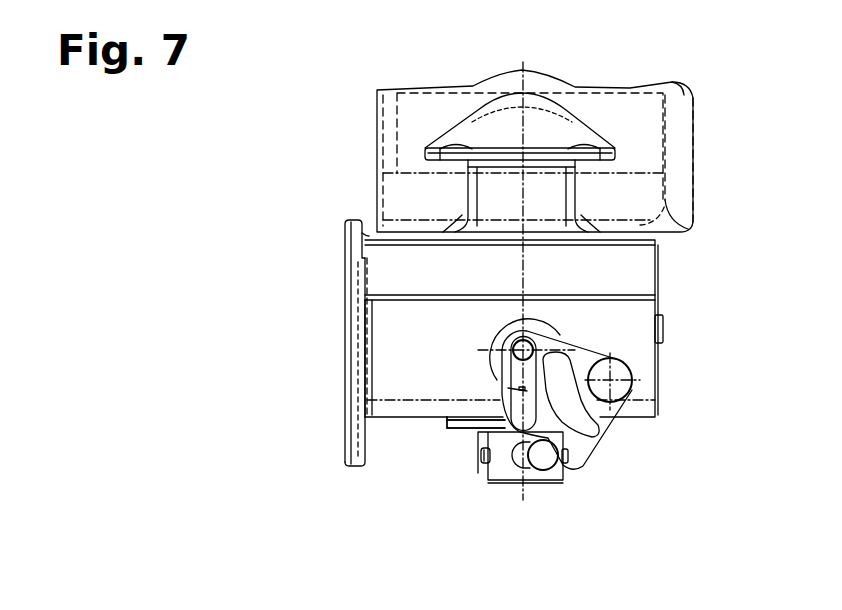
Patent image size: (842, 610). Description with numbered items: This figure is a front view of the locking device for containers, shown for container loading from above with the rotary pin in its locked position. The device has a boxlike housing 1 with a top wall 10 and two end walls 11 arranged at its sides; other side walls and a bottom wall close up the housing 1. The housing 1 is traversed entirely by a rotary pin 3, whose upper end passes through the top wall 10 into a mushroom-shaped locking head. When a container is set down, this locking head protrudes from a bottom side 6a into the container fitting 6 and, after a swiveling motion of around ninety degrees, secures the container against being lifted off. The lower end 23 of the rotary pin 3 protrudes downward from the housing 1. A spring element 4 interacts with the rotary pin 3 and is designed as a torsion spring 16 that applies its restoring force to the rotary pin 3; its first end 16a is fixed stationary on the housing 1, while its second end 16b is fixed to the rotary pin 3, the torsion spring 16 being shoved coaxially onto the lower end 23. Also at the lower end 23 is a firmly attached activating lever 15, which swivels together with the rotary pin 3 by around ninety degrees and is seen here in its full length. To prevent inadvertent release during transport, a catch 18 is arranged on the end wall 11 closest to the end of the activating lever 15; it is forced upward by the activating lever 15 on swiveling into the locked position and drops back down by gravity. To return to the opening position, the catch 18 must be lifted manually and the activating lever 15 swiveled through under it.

The housing 1 is at (406, 285).
The rotary pin 3 is at (560, 94).
The spring element 4 is at (475, 428).
The container fitting 6 is at (430, 102).
The bottom side 6a is at (678, 234).
The top wall 10 is at (369, 233).
The end wall 11 is at (403, 390).
The activating lever 15 is at (547, 462).
The torsion spring 16 is at (476, 424).
The first end 16a is at (442, 420).
The second end 16b is at (473, 426).
The catch 18 is at (605, 422).
The lower end 23 is at (498, 470).